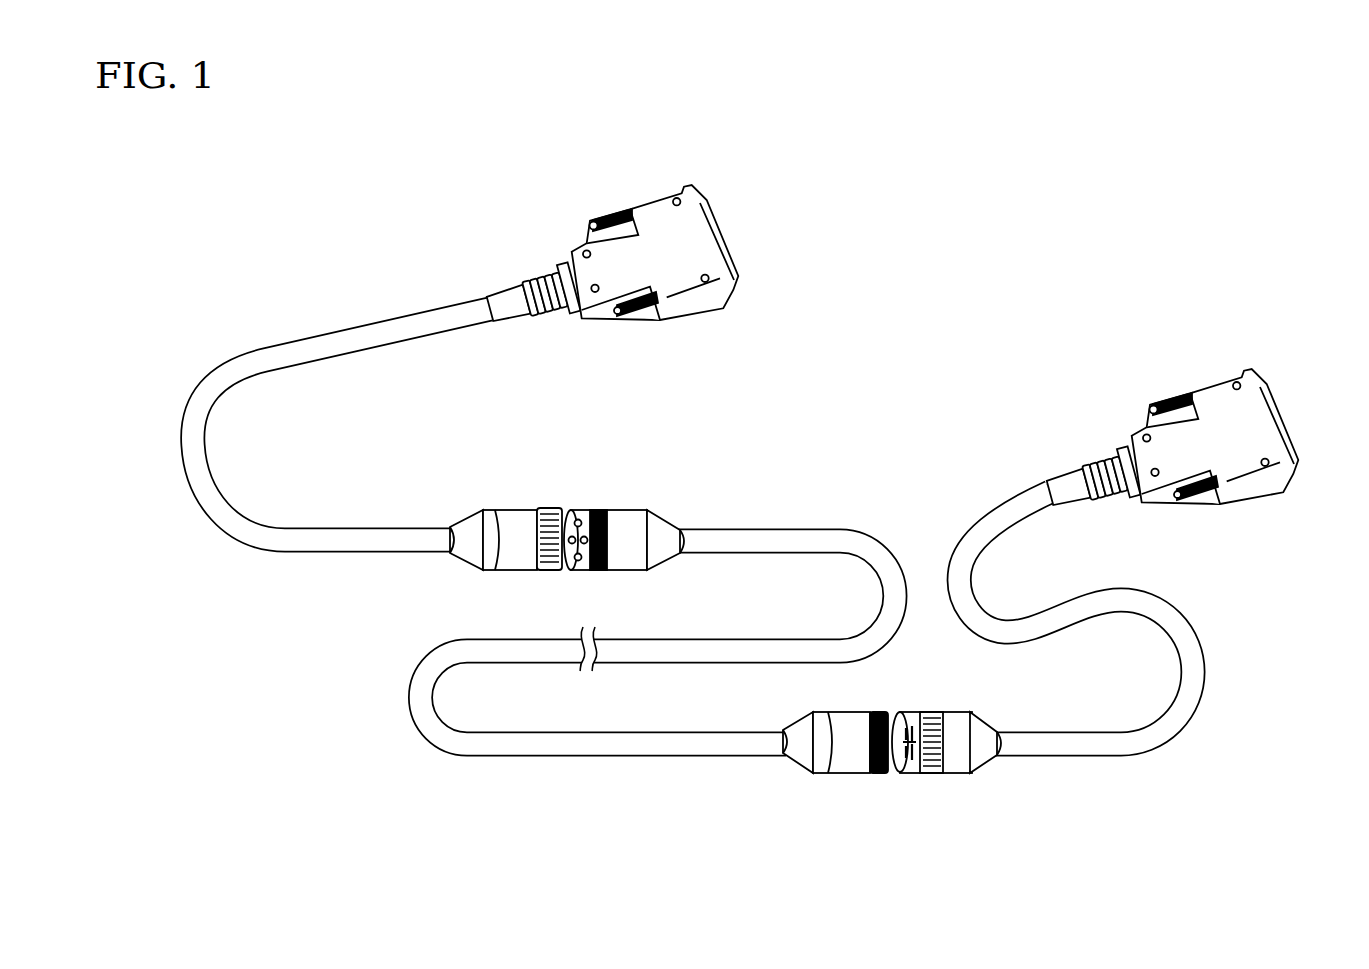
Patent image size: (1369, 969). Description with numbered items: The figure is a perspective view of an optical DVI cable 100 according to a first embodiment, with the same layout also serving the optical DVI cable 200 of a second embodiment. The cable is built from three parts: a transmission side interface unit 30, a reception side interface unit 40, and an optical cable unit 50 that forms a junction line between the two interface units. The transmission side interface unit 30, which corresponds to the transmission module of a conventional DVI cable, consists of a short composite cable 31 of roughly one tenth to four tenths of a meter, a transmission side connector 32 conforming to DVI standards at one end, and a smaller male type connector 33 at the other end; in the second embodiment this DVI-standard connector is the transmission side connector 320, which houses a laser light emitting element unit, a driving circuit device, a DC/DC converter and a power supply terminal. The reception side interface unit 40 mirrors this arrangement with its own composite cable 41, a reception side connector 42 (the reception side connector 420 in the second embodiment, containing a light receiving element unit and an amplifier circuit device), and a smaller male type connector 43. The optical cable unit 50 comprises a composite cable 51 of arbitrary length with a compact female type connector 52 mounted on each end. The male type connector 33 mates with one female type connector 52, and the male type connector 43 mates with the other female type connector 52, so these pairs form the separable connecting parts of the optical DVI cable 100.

The optical DVI cable 100 is at (753, 489).
The optical DVI cable 200 is at (950, 228).
The transmission side interface unit 30 is at (230, 563).
The composite cable 31 is at (335, 331).
The transmission side connector 32 is at (611, 220).
The transmission side connector 320 is at (655, 197).
The male type connector 33 is at (512, 510).
The reception side interface unit 40 is at (1223, 595).
The composite cable 41 is at (1005, 492).
The reception side connector 42 is at (1171, 408).
The reception side connector 420 is at (1215, 378).
The male type connector 43 is at (953, 764).
The optical cable unit 50 is at (585, 757).
The composite cable 51 is at (795, 529).
The female type connector 52 is at (625, 510).